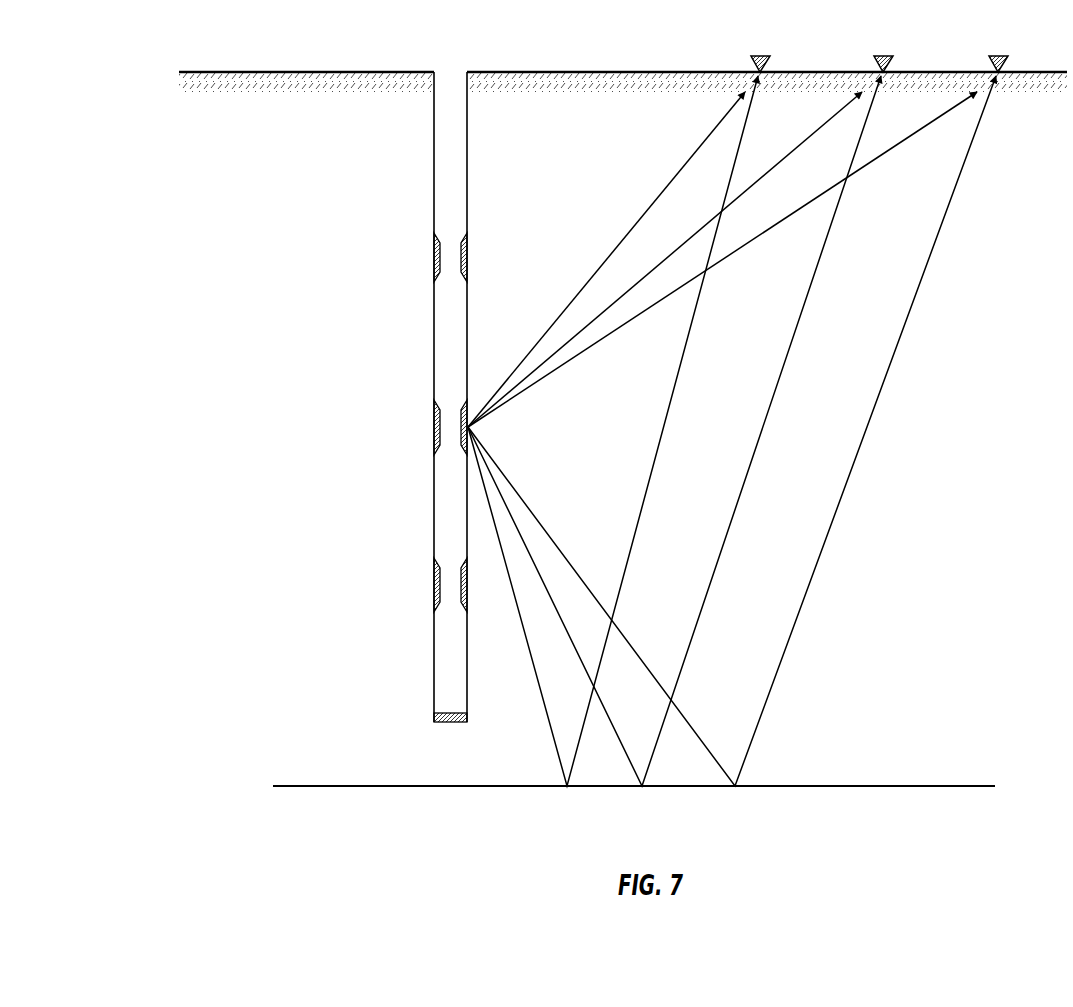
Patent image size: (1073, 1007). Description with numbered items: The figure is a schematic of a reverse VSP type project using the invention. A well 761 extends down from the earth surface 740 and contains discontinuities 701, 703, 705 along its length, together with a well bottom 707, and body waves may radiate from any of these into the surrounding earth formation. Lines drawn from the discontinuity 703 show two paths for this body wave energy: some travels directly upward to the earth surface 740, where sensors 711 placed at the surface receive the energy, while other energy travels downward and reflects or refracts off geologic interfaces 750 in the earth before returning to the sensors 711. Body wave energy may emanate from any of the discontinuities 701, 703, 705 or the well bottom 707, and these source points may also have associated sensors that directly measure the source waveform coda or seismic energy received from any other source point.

The earth surface 740 is at (623, 66).
The well 761 is at (428, 381).
The discontinuity 701 is at (418, 251).
The discontinuity 703 is at (418, 427).
The discontinuity 705 is at (418, 584).
The well bottom 707 is at (418, 703).
The sensors 711 is at (852, 47).
The geologic interfaces 750 is at (626, 769).